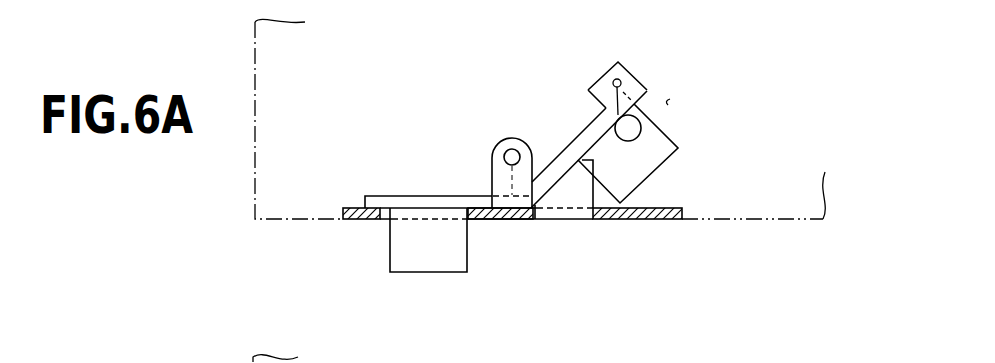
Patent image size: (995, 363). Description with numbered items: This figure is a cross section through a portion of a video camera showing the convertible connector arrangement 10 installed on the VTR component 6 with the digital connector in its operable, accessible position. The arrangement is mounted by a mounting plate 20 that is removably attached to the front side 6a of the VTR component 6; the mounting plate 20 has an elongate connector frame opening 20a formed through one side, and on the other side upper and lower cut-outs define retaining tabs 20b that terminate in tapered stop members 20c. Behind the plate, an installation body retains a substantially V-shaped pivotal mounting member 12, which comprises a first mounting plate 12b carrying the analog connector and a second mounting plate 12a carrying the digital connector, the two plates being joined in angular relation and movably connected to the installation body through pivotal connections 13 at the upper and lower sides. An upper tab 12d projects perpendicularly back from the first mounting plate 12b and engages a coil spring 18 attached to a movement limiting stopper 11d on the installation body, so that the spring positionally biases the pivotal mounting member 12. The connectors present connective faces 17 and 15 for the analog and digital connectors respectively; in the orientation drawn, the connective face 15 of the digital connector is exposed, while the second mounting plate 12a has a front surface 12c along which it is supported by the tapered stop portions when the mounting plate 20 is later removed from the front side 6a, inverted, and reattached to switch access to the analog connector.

The VTR component 6 is at (253, 113).
The front side of the VTR component 6a is at (755, 219).
The convertible connector arrangement 10 is at (552, 165).
The movement limiting stopper 11d is at (668, 105).
The pivotal mounting member 12 is at (530, 141).
The second mounting plate 12a is at (405, 200).
The first mounting plate 12b is at (589, 130).
The front surface of the second plate 12c is at (512, 183).
The upper tab 12d is at (620, 79).
The pivotal connections 13 is at (510, 149).
The connective face of the digital connector 15 is at (429, 273).
The connective face of the analog connector 17 is at (667, 163).
The coil spring 18 is at (660, 118).
The mounting plate 20 is at (535, 199).
The elongate connector frame opening 20a is at (463, 217).
The retaining tabs 20b is at (577, 192).
The tapered stop members 20c is at (560, 177).